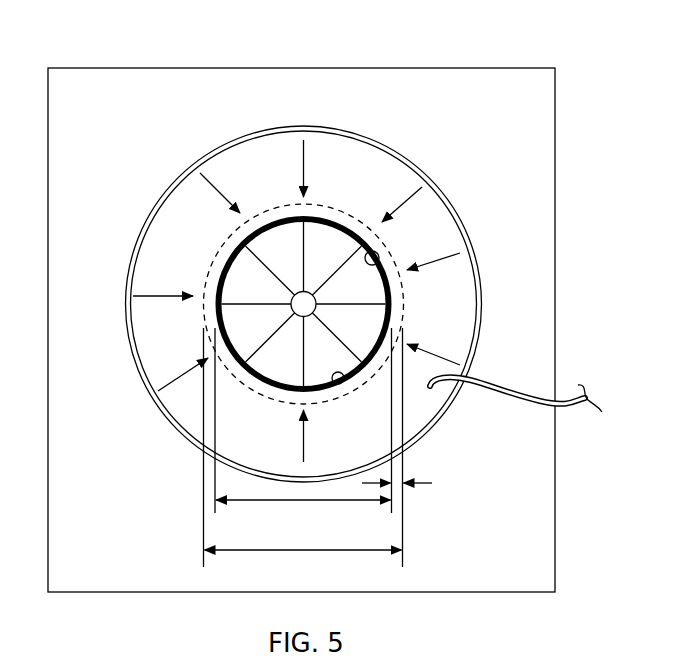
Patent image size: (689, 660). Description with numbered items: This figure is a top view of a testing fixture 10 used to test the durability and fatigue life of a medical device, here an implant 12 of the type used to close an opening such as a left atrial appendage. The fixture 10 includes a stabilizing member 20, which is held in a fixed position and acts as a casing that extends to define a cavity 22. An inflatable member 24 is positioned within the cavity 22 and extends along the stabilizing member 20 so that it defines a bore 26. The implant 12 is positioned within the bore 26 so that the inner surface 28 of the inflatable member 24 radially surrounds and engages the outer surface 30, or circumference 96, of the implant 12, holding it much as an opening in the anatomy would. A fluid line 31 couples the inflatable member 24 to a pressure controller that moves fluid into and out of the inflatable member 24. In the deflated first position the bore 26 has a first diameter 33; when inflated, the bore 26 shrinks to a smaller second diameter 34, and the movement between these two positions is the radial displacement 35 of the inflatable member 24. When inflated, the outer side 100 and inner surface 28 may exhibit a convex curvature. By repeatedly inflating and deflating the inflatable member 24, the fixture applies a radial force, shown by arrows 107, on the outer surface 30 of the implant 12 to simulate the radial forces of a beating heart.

The testing fixture 10 is at (468, 52).
The stabilizing member 20 is at (302, 68).
The cavity 22 is at (180, 170).
The inflatable member 24 is at (356, 158).
The outer side 100 is at (437, 193).
The arrows 107 is at (301, 170).
The implant 12 is at (328, 210).
The bore 26 is at (378, 248).
The inner surface 28 is at (340, 385).
The outer surface 30 is at (396, 322).
The circumference 96 is at (391, 306).
The fluid line 31 is at (517, 402).
The first diameter 33 is at (308, 551).
The second diameter 34 is at (268, 503).
The radial displacement 35 is at (420, 486).